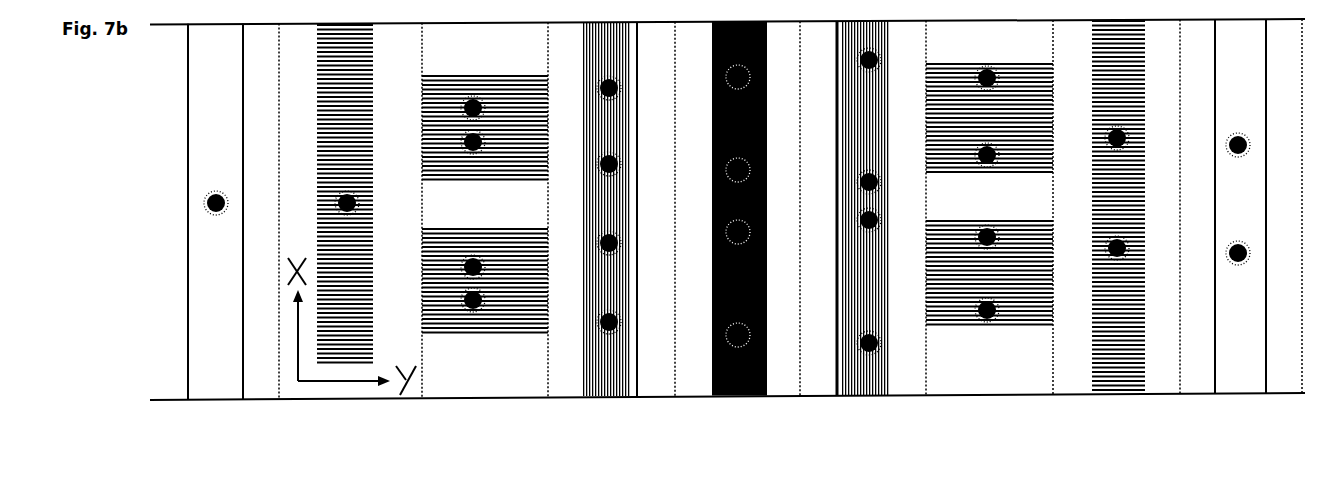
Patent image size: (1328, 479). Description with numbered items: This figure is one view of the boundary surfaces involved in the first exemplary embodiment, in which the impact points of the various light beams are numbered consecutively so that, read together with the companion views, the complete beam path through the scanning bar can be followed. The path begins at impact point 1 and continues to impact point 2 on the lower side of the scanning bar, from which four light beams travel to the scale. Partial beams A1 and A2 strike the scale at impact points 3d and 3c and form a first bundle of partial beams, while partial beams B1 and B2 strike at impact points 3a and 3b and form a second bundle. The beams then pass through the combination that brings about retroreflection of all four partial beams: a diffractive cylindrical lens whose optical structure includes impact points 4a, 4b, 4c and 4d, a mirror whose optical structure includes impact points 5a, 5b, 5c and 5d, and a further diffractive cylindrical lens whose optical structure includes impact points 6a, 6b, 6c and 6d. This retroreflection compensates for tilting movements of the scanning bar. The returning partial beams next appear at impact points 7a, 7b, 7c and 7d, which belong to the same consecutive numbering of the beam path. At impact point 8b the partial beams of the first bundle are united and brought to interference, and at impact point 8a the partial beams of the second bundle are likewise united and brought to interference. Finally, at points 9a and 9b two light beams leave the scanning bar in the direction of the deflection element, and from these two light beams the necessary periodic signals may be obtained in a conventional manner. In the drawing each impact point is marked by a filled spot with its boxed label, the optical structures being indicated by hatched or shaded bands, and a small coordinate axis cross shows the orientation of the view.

The impact point 1 is at (216, 186).
The impact point 2 is at (347, 187).
The impact point 3a is at (490, 300).
The impact point 3b is at (490, 142).
The impact point 3c is at (490, 267).
The impact point 3d is at (490, 108).
The impact point 4a is at (608, 336).
The impact point 4b is at (608, 150).
The impact point 4c is at (608, 258).
The impact point 4d is at (608, 74).
The impact point 5a is at (738, 349).
The impact point 5b is at (738, 158).
The impact point 5c is at (738, 246).
The impact point 5d is at (738, 62).
The impact point 6a is at (869, 357).
The impact point 6b is at (869, 166).
The impact point 6c is at (869, 236).
The impact point 6d is at (869, 47).
The impact point 7a is at (1002, 310).
The impact point 7b is at (1002, 155).
The impact point 7c is at (1002, 237).
The impact point 7d is at (1002, 78).
The impact point 8a is at (1116, 264).
The impact point 8b is at (1116, 125).
The impact point 9a is at (1239, 269).
The impact point 9b is at (1239, 130).